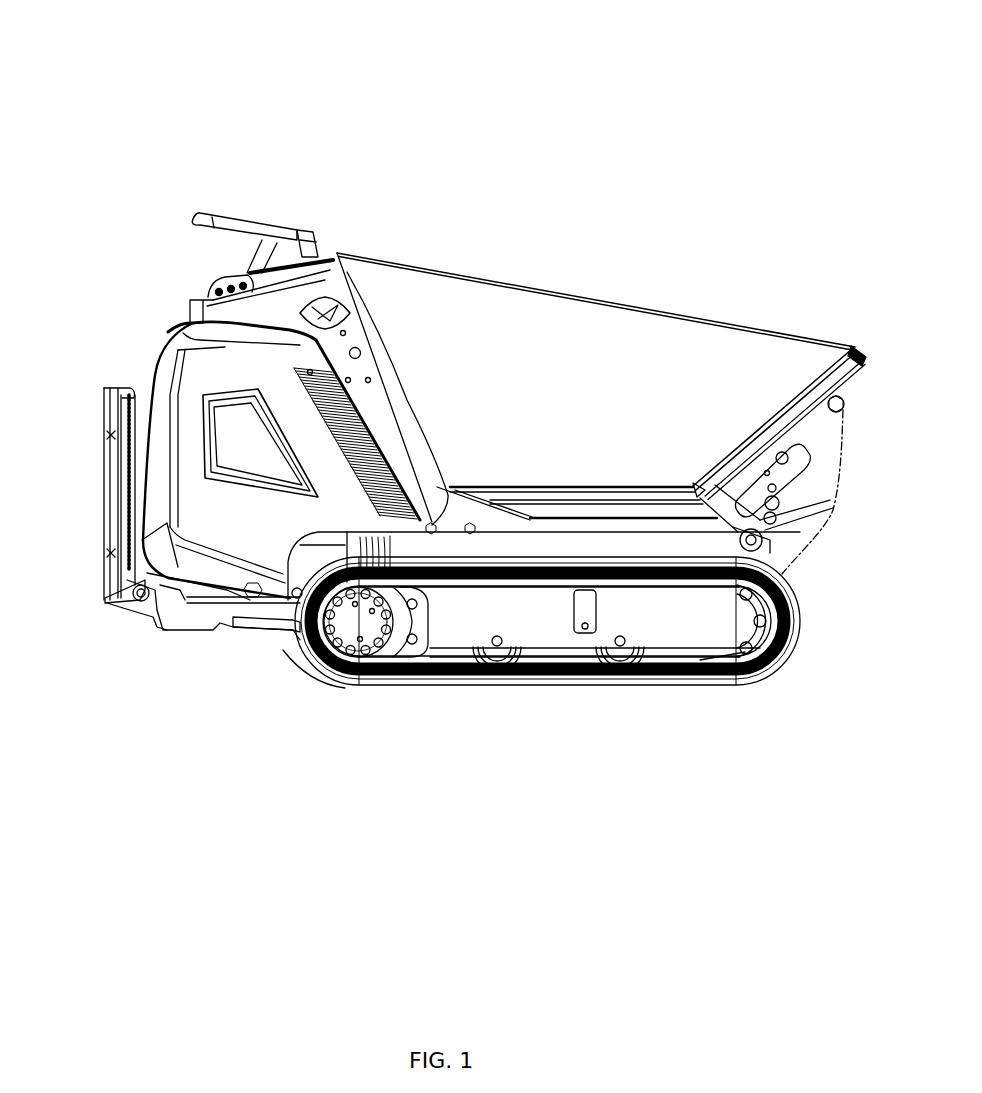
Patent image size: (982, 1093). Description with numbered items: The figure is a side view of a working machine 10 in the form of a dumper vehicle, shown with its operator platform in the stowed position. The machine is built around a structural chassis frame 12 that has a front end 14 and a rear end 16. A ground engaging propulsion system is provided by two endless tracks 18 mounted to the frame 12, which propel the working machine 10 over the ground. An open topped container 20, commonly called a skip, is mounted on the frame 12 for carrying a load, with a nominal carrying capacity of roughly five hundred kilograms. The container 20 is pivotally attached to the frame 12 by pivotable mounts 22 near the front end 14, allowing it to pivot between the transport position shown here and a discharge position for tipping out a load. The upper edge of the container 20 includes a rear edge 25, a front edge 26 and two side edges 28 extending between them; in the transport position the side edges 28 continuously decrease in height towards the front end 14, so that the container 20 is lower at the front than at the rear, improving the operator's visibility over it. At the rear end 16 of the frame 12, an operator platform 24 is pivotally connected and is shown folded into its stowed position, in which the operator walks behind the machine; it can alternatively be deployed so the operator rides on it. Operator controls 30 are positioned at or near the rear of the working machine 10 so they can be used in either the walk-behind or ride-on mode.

The working machine 10 is at (315, 105).
The structural chassis frame 12 is at (285, 645).
The front end 14 is at (768, 568).
The rear end 16 is at (252, 635).
The endless tracks 18 is at (557, 663).
The open topped container 20 is at (610, 352).
The pivotable mounts 22 is at (845, 409).
The operator platform 24 is at (118, 492).
The rear edge 25 is at (338, 251).
The front edge 26 is at (853, 351).
The side edges 28 is at (480, 280).
The operator controls 30 is at (238, 278).